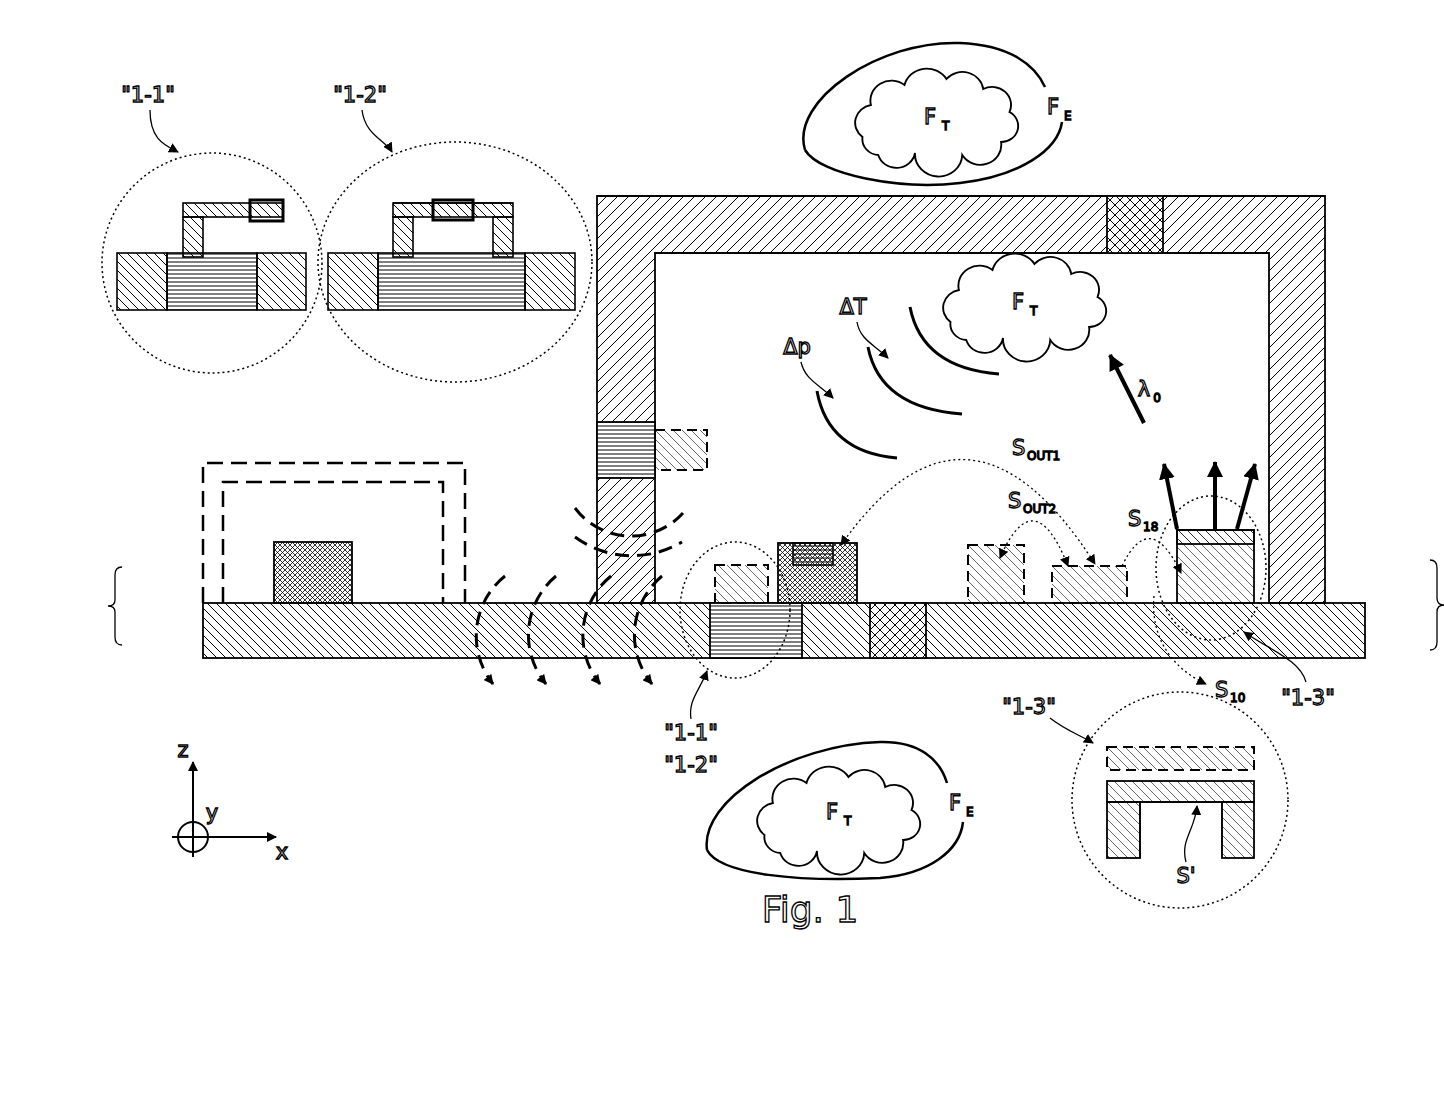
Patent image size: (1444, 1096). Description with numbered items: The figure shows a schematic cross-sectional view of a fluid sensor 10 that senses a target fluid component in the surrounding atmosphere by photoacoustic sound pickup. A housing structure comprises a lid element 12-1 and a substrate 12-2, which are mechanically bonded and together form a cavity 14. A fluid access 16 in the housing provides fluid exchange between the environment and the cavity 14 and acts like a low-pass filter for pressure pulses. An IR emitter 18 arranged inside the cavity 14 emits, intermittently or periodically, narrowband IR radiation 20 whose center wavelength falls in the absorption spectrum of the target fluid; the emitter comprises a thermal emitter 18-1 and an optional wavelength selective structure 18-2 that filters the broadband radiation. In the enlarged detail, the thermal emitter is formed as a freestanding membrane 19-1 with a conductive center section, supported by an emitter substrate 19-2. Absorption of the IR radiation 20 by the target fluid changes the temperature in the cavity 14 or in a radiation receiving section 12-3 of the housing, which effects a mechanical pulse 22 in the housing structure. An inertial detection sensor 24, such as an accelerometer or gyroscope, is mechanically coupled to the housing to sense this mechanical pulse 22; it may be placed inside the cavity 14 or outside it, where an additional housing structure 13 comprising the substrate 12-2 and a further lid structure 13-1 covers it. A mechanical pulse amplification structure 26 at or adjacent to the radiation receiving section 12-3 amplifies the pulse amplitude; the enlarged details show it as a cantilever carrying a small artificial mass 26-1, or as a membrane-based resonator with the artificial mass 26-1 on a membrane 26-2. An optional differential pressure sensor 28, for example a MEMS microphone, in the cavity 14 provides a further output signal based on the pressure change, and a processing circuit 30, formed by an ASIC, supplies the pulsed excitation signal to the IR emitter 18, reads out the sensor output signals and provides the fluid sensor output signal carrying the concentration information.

The fluid sensor 10 is at (1290, 81).
The lid element 12-1 is at (1300, 585).
The substrate 12-2 is at (205, 637).
The radiation receiving section 12-3 is at (597, 452).
The additional housing structure 13 is at (115, 567).
The further lid structure 13-1 is at (283, 542).
The cavity 14 is at (1208, 307).
The fluid access 16 is at (1135, 196).
The IR emitter 18 is at (1396, 467).
The thermal emitter 18-1 is at (1246, 537).
The wavelength selective structure 18-2 is at (1244, 573).
The freestanding membrane 19-1 is at (1246, 792).
The emitter substrate 19-2 is at (1246, 836).
The IR radiation 20 is at (1180, 426).
The mechanical pulse 22 is at (488, 686).
The inertial detection sensor 24 is at (352, 568).
The mechanical pulse amplification structure 26 is at (690, 447).
The artificial mass 26-1 is at (265, 203).
The membrane 26-2 is at (507, 202).
The differential pressure sensor 28 is at (968, 553).
The processing circuit 30 is at (1113, 582).